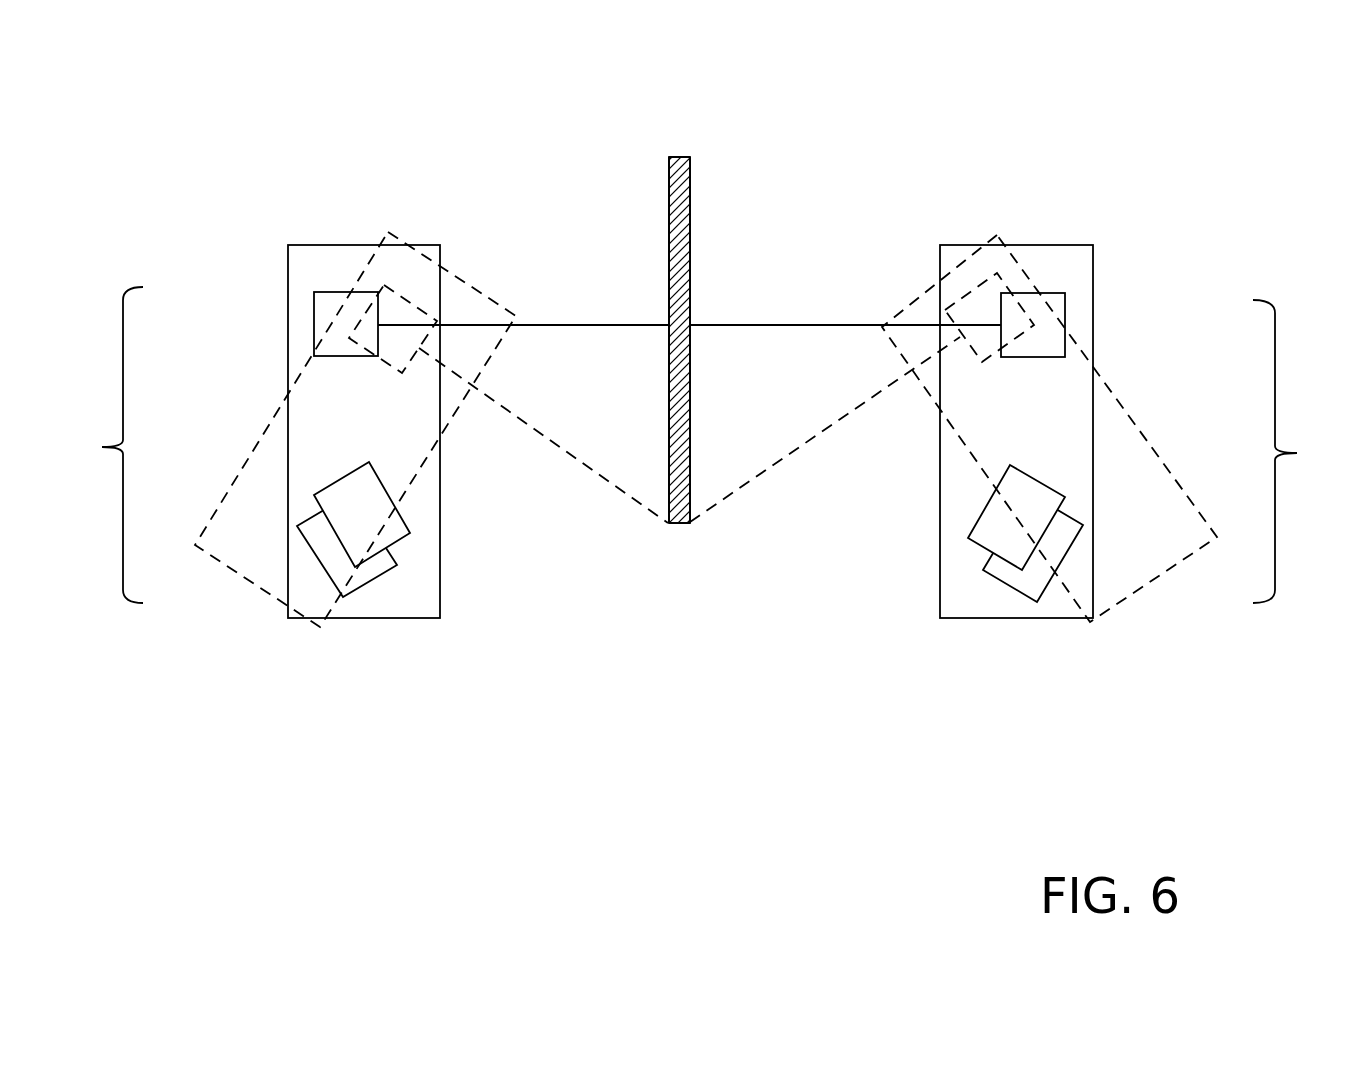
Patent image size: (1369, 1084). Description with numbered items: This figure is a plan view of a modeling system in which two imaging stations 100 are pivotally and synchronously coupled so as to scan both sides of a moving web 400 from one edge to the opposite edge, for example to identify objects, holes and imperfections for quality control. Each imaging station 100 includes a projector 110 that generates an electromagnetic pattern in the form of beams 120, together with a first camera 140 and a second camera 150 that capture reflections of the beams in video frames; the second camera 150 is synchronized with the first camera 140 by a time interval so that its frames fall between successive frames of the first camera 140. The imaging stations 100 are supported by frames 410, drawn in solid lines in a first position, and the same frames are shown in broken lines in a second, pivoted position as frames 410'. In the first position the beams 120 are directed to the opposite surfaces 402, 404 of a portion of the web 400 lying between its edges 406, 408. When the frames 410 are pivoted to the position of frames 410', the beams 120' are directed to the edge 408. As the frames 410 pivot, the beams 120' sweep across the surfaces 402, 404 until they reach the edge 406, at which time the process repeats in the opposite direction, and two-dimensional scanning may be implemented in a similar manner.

The imaging station 100 is at (703, 445).
The projector 110 is at (314, 323).
The beams 120 is at (689, 291).
The beams in second position 120' is at (689, 430).
The first camera 140 is at (410, 512).
The second camera 150 is at (373, 587).
The web 400 is at (665, 456).
The first surface of web 402 is at (666, 345).
The second surface of web 404 is at (690, 345).
The first edge of web 406 is at (684, 157).
The second edge of web 408 is at (676, 526).
The frame 410 is at (690, 403).
The frame in second position 410' is at (706, 373).